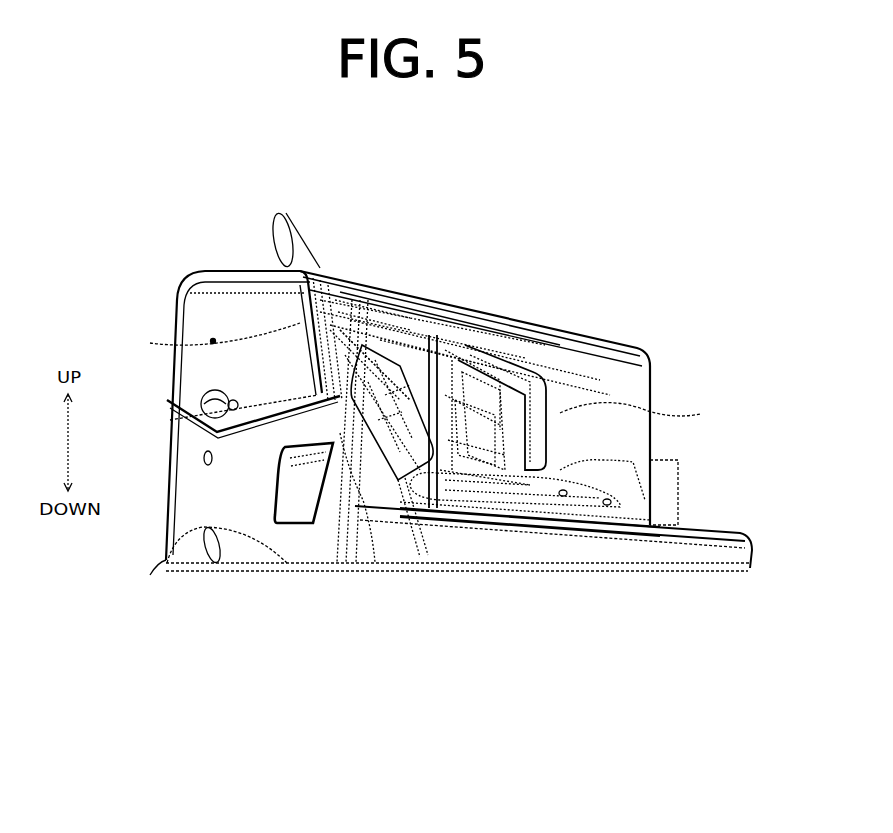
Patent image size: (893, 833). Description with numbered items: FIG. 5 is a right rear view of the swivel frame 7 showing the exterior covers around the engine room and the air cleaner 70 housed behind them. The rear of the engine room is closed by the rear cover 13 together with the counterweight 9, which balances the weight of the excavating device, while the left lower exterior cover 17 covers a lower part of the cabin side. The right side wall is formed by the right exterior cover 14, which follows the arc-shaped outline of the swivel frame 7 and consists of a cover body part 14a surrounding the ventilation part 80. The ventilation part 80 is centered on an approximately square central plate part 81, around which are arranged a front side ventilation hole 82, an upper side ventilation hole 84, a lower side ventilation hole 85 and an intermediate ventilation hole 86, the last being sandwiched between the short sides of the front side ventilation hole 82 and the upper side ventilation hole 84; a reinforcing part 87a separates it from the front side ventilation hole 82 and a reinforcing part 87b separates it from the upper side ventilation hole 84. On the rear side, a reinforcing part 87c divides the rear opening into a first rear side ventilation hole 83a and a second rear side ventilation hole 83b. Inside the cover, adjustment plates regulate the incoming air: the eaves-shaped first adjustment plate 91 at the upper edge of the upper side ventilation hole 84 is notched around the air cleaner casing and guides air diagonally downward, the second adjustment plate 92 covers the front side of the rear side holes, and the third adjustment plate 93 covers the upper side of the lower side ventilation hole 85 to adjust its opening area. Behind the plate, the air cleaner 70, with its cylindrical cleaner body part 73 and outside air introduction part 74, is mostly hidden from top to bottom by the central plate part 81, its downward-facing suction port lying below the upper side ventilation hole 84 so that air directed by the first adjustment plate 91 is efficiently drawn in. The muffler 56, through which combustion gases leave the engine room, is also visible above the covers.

The rear cover 13 is at (172, 348).
The counterweight 9 is at (150, 573).
The left lower exterior cover 17 is at (703, 572).
The swivel frame 7 is at (572, 570).
The cover body part 14a is at (640, 368).
The right exterior cover 14 is at (664, 492).
The front side ventilation hole 82 is at (700, 414).
The muffler 56 is at (278, 237).
The first adjustment plate 91 is at (410, 300).
The upper side ventilation hole 84 is at (447, 380).
The outside air introduction part 74 is at (455, 390).
The cleaner body part 73 is at (482, 382).
The air cleaner 70 is at (515, 238).
The reinforcing part 87a is at (483, 370).
The intermediate ventilation hole 86 is at (603, 377).
The reinforcing part 87b is at (612, 360).
The ventilation part 80 is at (418, 600).
The first rear side ventilation hole 83a is at (330, 566).
The second rear side ventilation hole 83b is at (348, 562).
The reinforcing part 87c is at (340, 575).
The third adjustment plate 93 is at (405, 572).
The second adjustment plate 92 is at (437, 520).
The central plate part 81 is at (480, 510).
The lower side ventilation hole 85 is at (512, 515).